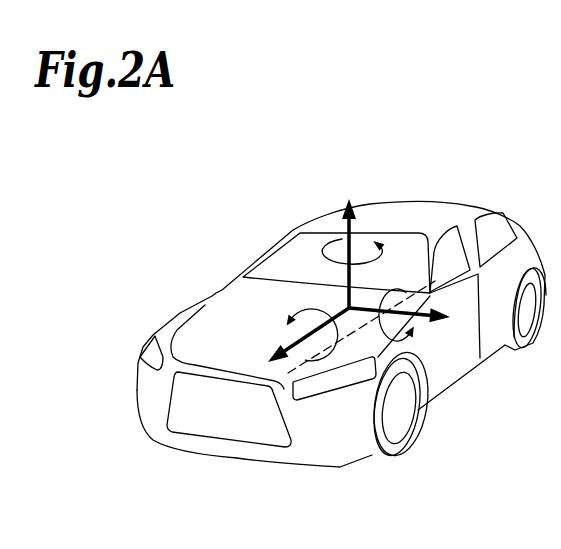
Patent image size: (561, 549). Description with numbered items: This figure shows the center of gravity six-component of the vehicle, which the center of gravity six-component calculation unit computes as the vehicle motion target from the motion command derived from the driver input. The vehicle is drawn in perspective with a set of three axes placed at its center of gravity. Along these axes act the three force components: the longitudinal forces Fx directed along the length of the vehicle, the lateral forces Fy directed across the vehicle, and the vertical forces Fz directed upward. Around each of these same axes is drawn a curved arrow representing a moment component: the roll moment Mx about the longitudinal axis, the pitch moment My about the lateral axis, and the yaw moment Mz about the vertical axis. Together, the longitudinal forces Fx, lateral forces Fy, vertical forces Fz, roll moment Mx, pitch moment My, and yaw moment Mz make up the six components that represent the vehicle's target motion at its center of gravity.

The longitudinal forces Fx is at (293, 339).
The lateral forces Fy is at (412, 307).
The vertical forces Fz is at (350, 239).
The roll moment Mx is at (293, 328).
The pitch moment My is at (411, 328).
The yaw moment Mz is at (367, 259).